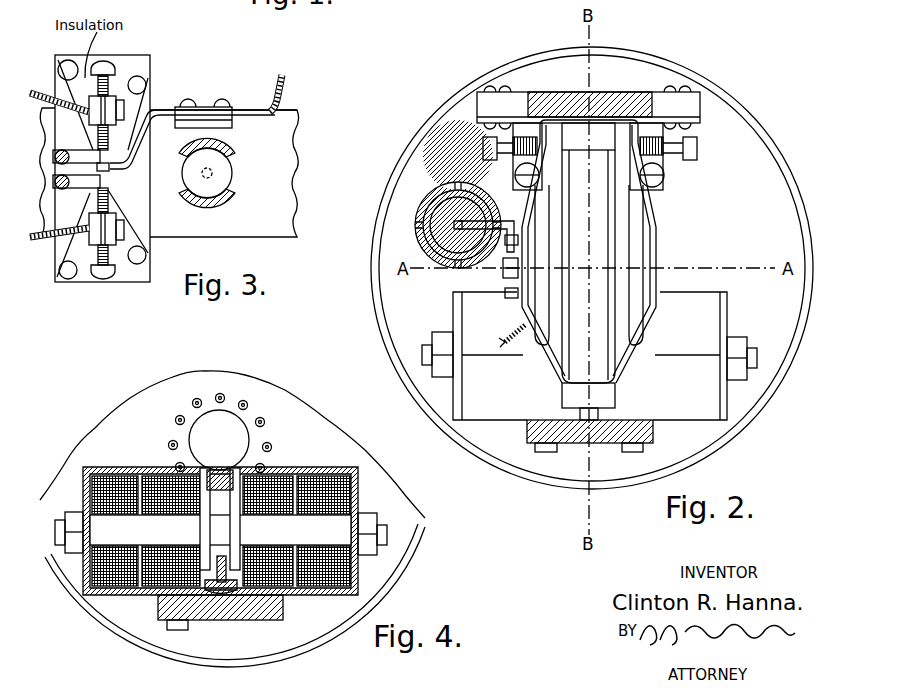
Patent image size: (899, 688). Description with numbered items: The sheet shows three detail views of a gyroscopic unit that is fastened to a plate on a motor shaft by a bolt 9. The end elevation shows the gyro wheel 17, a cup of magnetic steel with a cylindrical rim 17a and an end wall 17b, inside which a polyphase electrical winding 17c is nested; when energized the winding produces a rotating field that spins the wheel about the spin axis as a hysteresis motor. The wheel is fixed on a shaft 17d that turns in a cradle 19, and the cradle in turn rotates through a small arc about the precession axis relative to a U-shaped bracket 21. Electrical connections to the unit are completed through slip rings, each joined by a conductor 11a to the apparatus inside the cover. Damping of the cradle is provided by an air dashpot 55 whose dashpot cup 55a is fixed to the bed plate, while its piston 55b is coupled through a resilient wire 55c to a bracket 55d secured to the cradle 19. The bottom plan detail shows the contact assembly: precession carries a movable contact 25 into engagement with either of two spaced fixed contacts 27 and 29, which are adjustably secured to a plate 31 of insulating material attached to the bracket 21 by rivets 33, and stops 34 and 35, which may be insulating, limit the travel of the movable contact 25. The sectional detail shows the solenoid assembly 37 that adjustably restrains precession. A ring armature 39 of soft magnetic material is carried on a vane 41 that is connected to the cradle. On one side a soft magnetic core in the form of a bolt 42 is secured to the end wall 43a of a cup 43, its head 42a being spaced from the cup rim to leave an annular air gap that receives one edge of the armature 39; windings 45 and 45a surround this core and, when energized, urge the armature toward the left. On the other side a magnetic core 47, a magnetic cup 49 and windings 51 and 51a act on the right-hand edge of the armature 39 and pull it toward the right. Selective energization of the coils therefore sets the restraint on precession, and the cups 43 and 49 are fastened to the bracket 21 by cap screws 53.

In FIG. 4, the bolt 9 is at (228, 418).
In FIG. 4, the conductor 11a is at (175, 420).
In FIG. 2, the gyro wheel 17 is at (558, 373).
In FIG. 2, the cylindrical rim 17a is at (625, 383).
In FIG. 2, the end wall 17b is at (628, 333).
In FIG. 2, the polyphase electrical winding 17c is at (550, 210).
In FIG. 2, the shaft 17d is at (656, 230).
In FIG. 2, the cradle 19 is at (657, 212).
In FIG. 3, the U-shaped bracket 21 is at (284, 212).
In FIG. 2, the U-shaped bracket 21 is at (635, 94).
In FIG. 3, the movable contact 25 is at (123, 160).
In FIG. 3, the fixed contact 27 is at (100, 137).
In FIG. 3, the fixed contact 29 is at (100, 203).
In FIG. 3, the plate of insulating material 31 is at (125, 78).
In FIG. 3, the rivets 33 is at (142, 89).
In FIG. 3, the stop 34 is at (56, 157).
In FIG. 3, the stop 35 is at (56, 182).
In FIG. 2, the solenoid assembly 37 is at (668, 414).
In FIG. 4, the solenoid assembly 37 is at (327, 459).
In FIG. 4, the armature 39 is at (221, 472).
In FIG. 4, the vane 41 is at (228, 558).
In FIG. 4, the bolt 42 is at (106, 537).
In FIG. 4, the head 42a is at (208, 530).
In FIG. 4, the cup 43 is at (148, 468).
In FIG. 4, the end wall 43a is at (88, 498).
In FIG. 4, the winding 45 is at (128, 595).
In FIG. 4, the winding 45a is at (152, 596).
In FIG. 4, the magnetic core 47 is at (332, 528).
In FIG. 4, the magnetic cup 49 is at (329, 597).
In FIG. 4, the winding 51 is at (325, 477).
In FIG. 4, the winding 51a is at (285, 477).
In FIG. 2, the cap screws 53 is at (545, 453).
In FIG. 4, the cap screws 53 is at (190, 626).
In FIG. 2, the air dashpot 55 is at (415, 222).
In FIG. 2, the dashpot cup 55a is at (424, 233).
In FIG. 2, the piston 55b is at (450, 212).
In FIG. 2, the resilient wire 55c is at (458, 218).
In FIG. 2, the bracket 55d is at (475, 218).